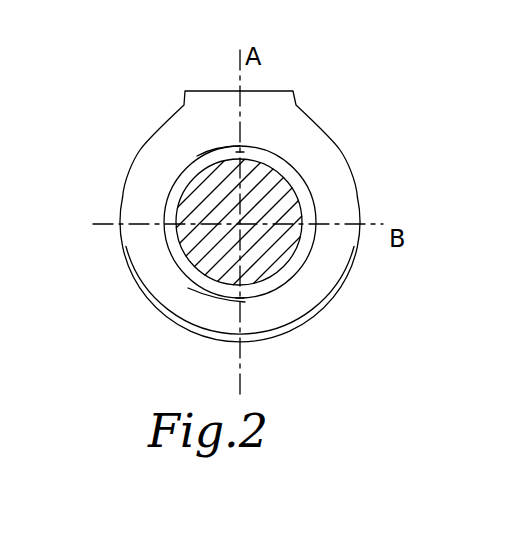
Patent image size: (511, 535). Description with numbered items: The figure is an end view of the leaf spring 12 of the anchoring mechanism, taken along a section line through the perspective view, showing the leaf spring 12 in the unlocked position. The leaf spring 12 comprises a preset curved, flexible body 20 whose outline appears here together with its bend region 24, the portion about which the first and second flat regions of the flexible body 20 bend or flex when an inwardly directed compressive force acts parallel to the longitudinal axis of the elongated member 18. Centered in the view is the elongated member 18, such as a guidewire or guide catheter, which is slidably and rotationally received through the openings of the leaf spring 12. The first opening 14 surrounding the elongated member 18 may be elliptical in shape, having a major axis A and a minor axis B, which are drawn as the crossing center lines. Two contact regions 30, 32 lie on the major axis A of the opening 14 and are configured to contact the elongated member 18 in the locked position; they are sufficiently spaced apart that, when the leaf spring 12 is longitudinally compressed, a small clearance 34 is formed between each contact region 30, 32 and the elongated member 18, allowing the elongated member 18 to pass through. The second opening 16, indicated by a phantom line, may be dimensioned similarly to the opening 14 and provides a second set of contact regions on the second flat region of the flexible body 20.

The leaf spring 12 is at (249, 190).
The first opening 14 is at (302, 192).
The second opening 16 is at (315, 205).
The elongated member 18 is at (268, 252).
The flexible body 20 is at (135, 208).
The bend region 24 is at (283, 92).
The first contact region 30 is at (240, 147).
The second contact region 32 is at (238, 300).
The clearance 34 is at (240, 152).